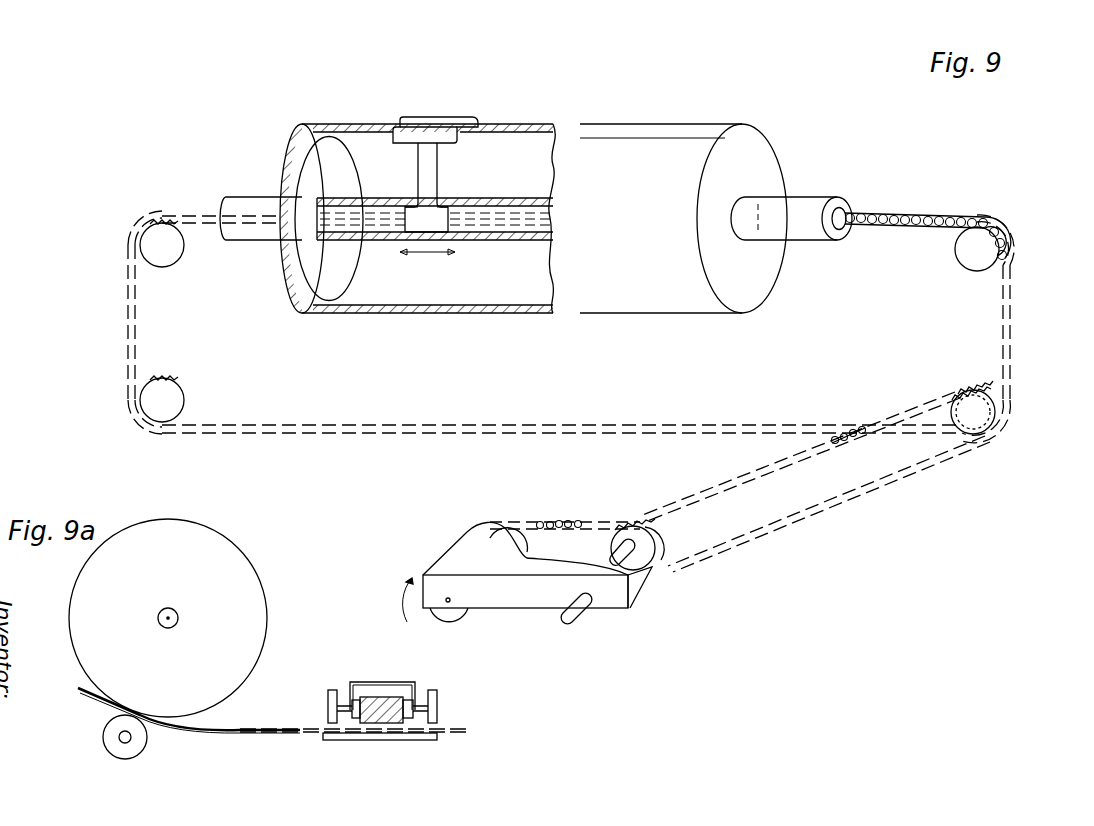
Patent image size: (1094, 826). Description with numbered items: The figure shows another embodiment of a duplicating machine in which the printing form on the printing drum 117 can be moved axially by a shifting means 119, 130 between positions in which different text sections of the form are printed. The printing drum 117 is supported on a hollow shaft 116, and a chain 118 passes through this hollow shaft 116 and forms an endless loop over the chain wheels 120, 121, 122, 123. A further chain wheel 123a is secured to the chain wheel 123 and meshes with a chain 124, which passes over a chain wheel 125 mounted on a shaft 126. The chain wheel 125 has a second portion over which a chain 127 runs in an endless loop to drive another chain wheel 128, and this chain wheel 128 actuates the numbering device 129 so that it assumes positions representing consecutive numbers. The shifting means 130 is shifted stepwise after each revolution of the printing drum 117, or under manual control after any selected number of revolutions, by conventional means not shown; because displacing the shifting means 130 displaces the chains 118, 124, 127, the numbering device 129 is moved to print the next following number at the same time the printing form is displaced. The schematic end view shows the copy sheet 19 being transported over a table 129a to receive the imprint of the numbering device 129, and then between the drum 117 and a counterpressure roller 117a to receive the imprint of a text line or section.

In FIG. 9A, the copy sheet 19 is at (199, 733).
In FIG. 9, the hollow shaft 116 is at (817, 205).
In FIG. 9, the printing drum 117 is at (756, 147).
In FIG. 9A, the printing drum 117 is at (233, 560).
In FIG. 9A, the counterpressure roller 117a is at (102, 734).
In FIG. 9, the chain 118 is at (922, 212).
In FIG. 9, the shifting means 119 is at (428, 192).
In FIG. 9, the chain wheel 120 is at (990, 245).
In FIG. 9, the chain wheel 121 is at (160, 236).
In FIG. 9, the chain wheel 122 is at (156, 408).
In FIG. 9, the chain wheel 123 is at (995, 388).
In FIG. 9, the chain wheel 123a is at (985, 410).
In FIG. 9, the chain 124 is at (848, 441).
In FIG. 9, the chain wheel 125 is at (660, 556).
In FIG. 9, the shaft 126 is at (583, 612).
In FIG. 9A, the shaft 126 is at (425, 707).
In FIG. 9, the chain 127 is at (557, 520).
In FIG. 9, the chain wheel 128 is at (510, 540).
In FIG. 9, the numbering device 129 is at (446, 624).
In FIG. 9A, the numbering device 129 is at (366, 697).
In FIG. 9A, the table 129a is at (375, 741).
In FIG. 9, the shifting means 130 is at (431, 120).